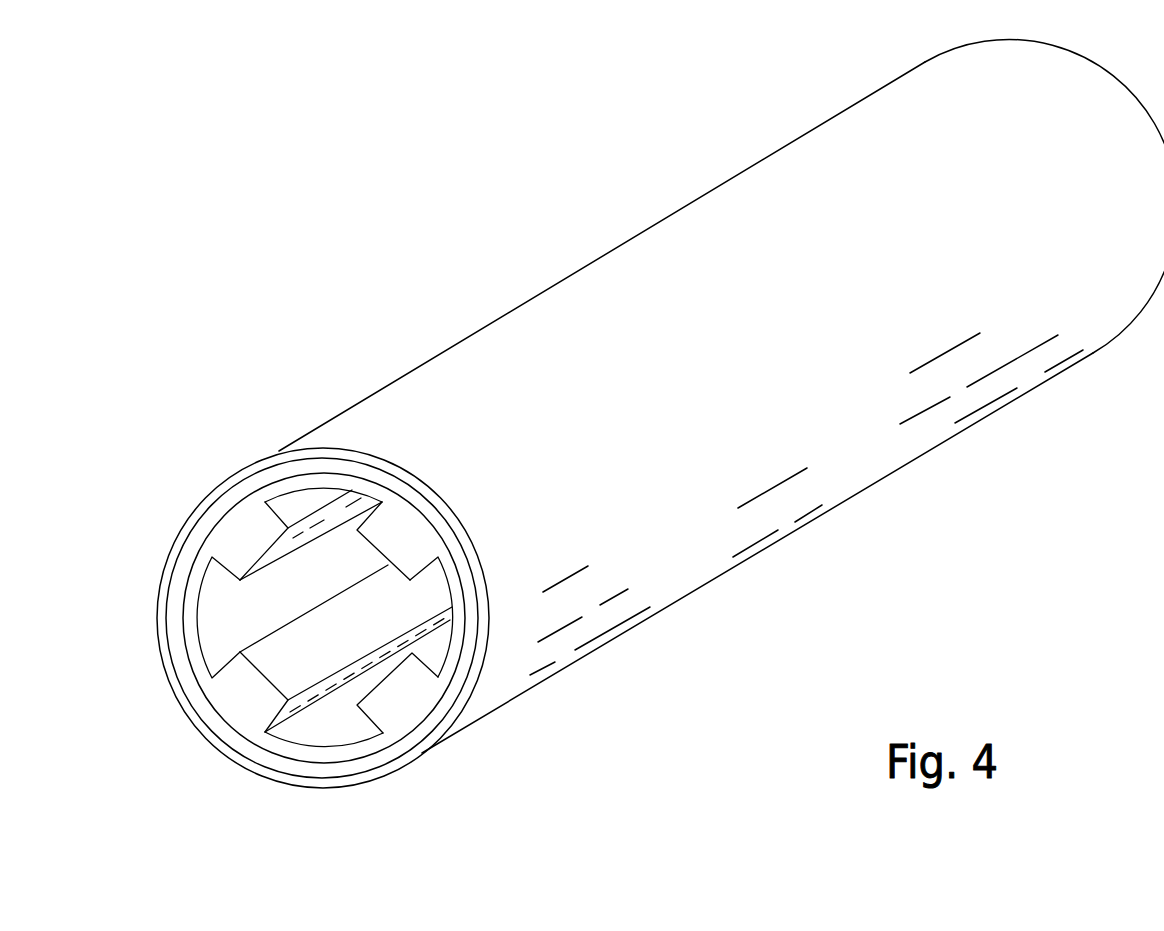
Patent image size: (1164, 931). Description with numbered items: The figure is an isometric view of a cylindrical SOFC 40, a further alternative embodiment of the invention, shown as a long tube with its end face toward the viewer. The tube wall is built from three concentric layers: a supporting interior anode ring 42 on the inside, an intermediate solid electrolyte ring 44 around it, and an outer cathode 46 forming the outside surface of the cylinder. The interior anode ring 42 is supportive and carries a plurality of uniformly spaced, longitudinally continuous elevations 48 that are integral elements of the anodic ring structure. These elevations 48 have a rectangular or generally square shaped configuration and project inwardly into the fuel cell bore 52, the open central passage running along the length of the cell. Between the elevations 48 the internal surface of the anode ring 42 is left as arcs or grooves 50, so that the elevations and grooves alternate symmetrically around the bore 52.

The cylindrical SOFC 40 is at (624, 450).
The supporting interior anode ring 42 is at (320, 488).
The intermediate solid electrolyte ring 44 is at (465, 667).
The outer cathode 46 is at (827, 180).
The longitudinal elevations 48 is at (242, 697).
The arcs or grooves 50 is at (237, 615).
The fuel cell bore 52 is at (307, 580).